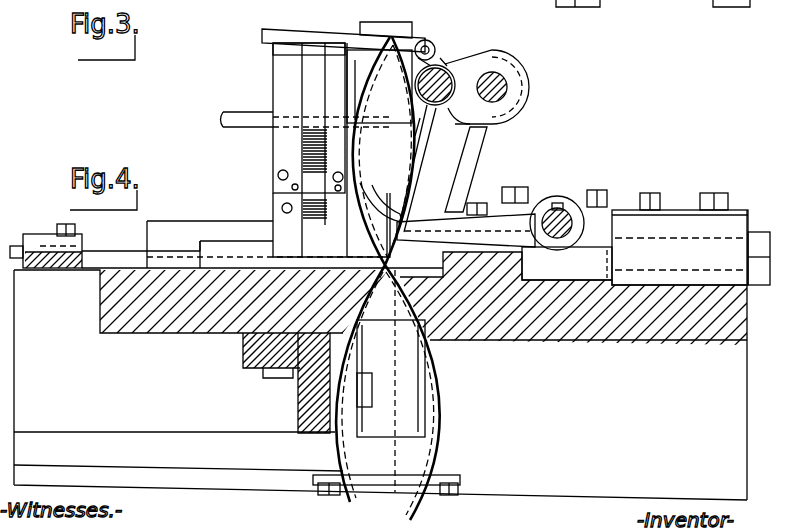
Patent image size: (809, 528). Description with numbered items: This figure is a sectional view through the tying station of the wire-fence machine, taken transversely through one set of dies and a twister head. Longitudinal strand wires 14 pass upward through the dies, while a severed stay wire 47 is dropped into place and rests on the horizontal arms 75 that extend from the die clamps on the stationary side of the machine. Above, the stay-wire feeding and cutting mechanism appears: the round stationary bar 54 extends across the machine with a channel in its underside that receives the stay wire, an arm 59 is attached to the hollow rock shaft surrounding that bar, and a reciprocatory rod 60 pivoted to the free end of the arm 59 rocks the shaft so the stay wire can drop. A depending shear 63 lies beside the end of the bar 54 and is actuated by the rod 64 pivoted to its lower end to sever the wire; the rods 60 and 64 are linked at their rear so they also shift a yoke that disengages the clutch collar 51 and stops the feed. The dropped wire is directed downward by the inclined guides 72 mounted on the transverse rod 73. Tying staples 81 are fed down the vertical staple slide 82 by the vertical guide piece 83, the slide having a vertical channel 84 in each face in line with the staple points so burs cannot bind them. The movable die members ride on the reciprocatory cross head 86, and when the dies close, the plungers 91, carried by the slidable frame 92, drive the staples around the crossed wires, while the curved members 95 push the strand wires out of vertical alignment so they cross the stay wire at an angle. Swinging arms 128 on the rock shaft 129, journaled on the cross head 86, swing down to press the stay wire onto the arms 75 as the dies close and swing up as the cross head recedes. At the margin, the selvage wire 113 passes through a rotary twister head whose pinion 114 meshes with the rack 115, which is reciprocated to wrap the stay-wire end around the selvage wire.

The wires 14 is at (407, 100).
The stay wires 47 is at (440, 135).
The clutch collar 51 is at (447, 67).
The round stationary bar 54 is at (503, 53).
The arm 59 is at (427, 43).
The reciprocatory rod 60 is at (321, 31).
The depending shear 63 is at (420, 136).
The actuating rod 64 is at (223, 117).
The inclined guides 72 is at (470, 169).
The transverse rod 73 is at (507, 83).
The horizontal arms 75 is at (447, 333).
The tying staples 81 is at (302, 155).
The vertical staple slide 82 is at (317, 98).
The vertical guide piece 83 is at (283, 83).
The vertical channel 84 is at (273, 58).
The reciprocatory cross head 86 is at (670, 288).
The reciprocatory plungers 91 is at (115, 249).
The slidable frame 92 is at (33, 256).
The curved members 95 is at (393, 203).
The selvage wires 113 is at (394, 500).
The pinion 114 is at (373, 477).
The rack 115 is at (137, 432).
The swinging arms 128 is at (466, 225).
The rock shaft 129 is at (562, 217).